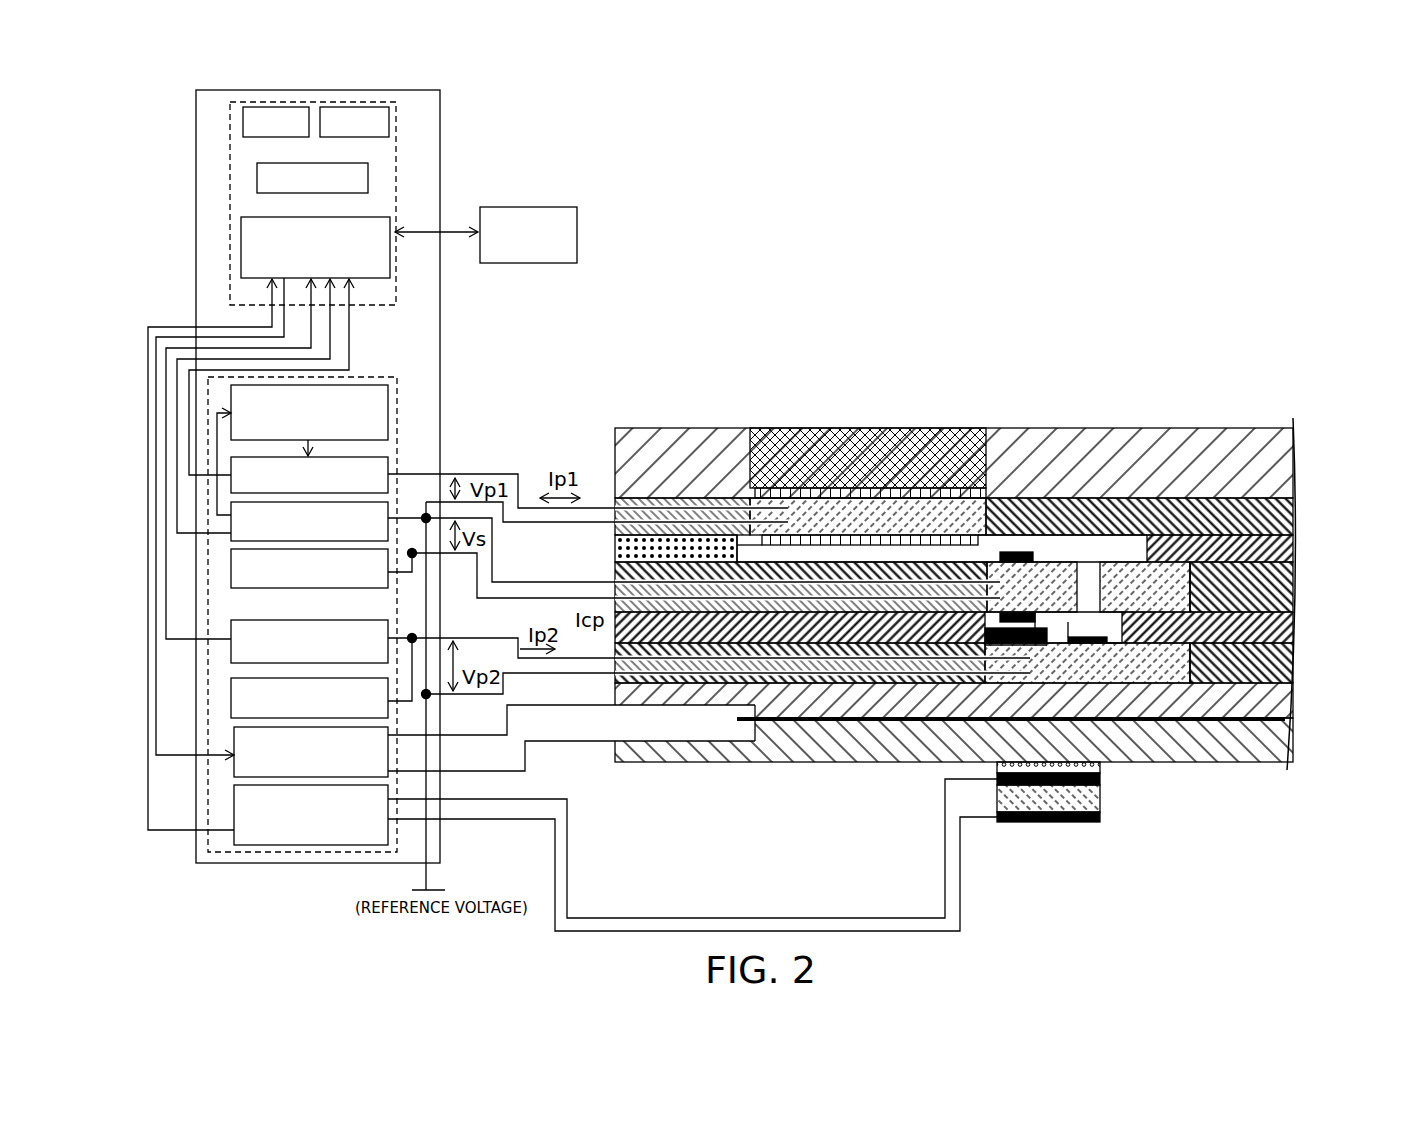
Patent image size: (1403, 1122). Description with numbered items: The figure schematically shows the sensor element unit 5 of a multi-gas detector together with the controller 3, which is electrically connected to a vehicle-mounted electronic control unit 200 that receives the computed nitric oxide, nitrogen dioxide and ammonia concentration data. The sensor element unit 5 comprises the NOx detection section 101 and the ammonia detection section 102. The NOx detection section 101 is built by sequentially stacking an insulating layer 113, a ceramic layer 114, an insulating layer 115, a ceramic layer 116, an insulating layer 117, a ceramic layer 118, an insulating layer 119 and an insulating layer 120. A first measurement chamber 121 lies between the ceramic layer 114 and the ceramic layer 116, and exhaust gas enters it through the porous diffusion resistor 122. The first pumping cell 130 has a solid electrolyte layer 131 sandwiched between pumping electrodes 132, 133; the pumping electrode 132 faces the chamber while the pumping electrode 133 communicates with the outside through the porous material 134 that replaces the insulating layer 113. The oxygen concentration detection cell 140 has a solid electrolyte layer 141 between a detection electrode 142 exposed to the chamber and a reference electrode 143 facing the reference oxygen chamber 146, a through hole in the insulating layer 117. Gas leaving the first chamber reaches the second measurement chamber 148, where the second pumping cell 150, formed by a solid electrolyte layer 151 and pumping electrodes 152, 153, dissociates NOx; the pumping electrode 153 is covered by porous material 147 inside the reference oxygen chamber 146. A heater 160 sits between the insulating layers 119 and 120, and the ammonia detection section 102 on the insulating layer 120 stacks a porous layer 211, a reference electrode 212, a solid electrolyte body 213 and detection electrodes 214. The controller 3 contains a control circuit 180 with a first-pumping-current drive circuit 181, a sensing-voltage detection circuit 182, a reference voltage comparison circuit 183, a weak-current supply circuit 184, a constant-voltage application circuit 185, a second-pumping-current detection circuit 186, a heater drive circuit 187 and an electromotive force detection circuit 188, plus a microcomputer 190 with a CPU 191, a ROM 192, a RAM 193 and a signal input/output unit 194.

The controller 3 is at (372, 464).
The sensor element unit 5 is at (957, 539).
The NOx detection section 101 is at (957, 497).
The ammonia detection section 102 is at (1103, 851).
The insulating layer 113 is at (1295, 482).
The ceramic layer 114 is at (1295, 517).
The insulating layer 115 is at (1295, 550).
The ceramic layer 116 is at (1295, 582).
The insulating layer 117 is at (1295, 624).
The ceramic layer 118 is at (1295, 661).
The insulating layer 119 is at (1295, 701).
The insulating layer 120 is at (1295, 738).
The first measurement chamber 121 is at (772, 553).
The diffusion resistor 122 is at (615, 549).
The first pumping cell 130 is at (849, 417).
The solid electrolyte layer 131 is at (853, 512).
The pumping electrode 132 is at (760, 540).
The pumping electrode 133 is at (800, 488).
The porous material 134 is at (905, 428).
The oxygen concentration detection cell 140 is at (912, 697).
The solid electrolyte layer 141 is at (990, 605).
The detection electrode 142 is at (1000, 557).
The reference electrode 143 is at (1000, 618).
The reference oxygen chamber 146 is at (1045, 623).
The porous material 147 is at (993, 640).
The second measurement chamber 148 is at (1227, 657).
The second pumping cell 150 is at (1128, 731).
The solid electrolyte layer 151 is at (1102, 640).
The pumping electrode 152 is at (1117, 620).
The pumping electrode 153 is at (1028, 645).
The heater 160 is at (1284, 758).
The control circuit 180 is at (334, 585).
The Ip1 drive circuit 181 is at (388, 465).
The Vs detection circuit 182 is at (388, 515).
The reference voltage comparison circuit 183 is at (388, 393).
The Icp supply circuit 184 is at (388, 572).
The Vp2 application circuit 185 is at (231, 696).
The Ip2 detection circuit 186 is at (388, 630).
The heater drive circuit 187 is at (234, 740).
The electromotive force detection circuit 188 is at (234, 800).
The microcomputer 190 is at (328, 185).
The CPU 191 is at (368, 180).
The ROM 192 is at (243, 122).
The RAM 193 is at (389, 120).
The signal input/output unit 194 is at (241, 248).
The electronic control unit 200 is at (577, 232).
The porous layer 211 is at (1105, 768).
The reference electrode 212 is at (1103, 781).
The solid electrolyte body for ammonia 213 is at (1085, 806).
The detection electrodes 214 is at (1048, 857).